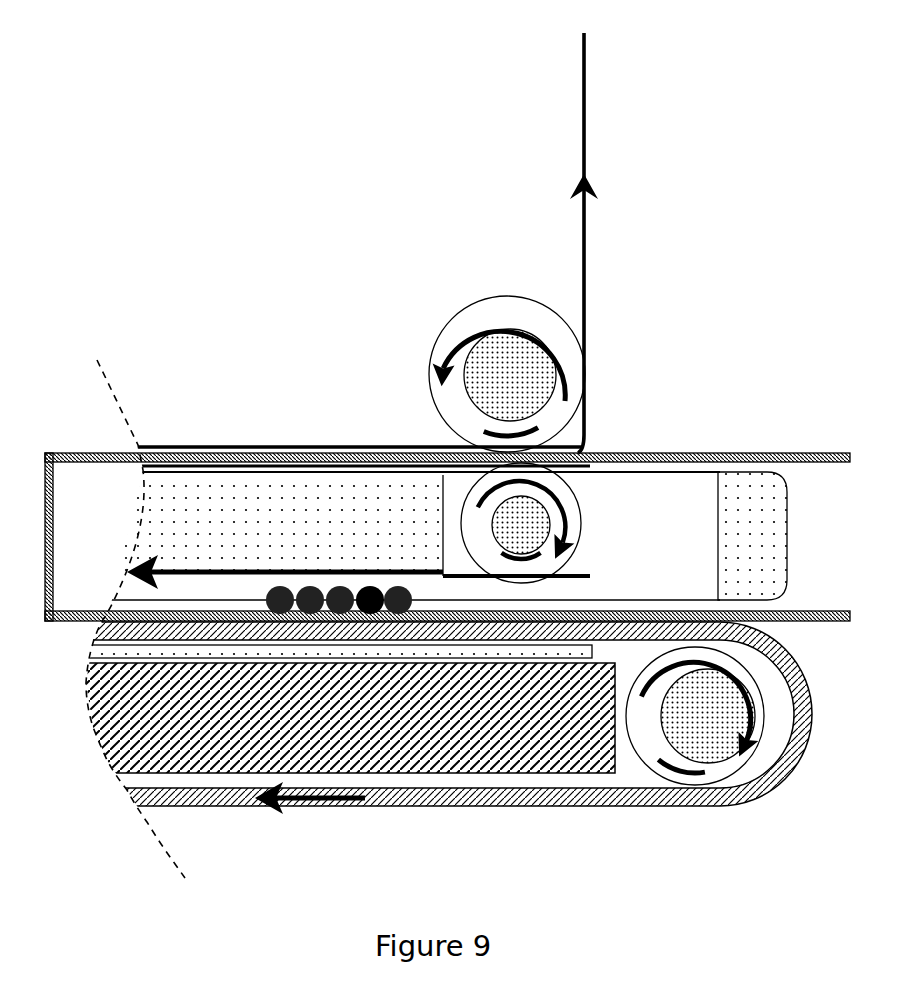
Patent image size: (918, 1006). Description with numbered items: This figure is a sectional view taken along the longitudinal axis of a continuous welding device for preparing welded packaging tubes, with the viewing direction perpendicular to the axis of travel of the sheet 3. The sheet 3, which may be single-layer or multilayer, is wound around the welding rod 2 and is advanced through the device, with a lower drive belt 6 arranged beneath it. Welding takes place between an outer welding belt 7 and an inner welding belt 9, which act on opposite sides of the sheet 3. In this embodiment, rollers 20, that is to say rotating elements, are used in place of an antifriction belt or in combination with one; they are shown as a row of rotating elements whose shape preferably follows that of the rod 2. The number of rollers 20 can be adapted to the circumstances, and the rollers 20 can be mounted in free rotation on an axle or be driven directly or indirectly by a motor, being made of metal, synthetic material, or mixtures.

The welding rod 2 is at (245, 490).
The sheet 3 is at (793, 452).
The lower drive belt 6 is at (643, 808).
The outer welding belt 7 is at (581, 142).
The inner welding belt 9 is at (572, 500).
The rollers 20 is at (398, 586).